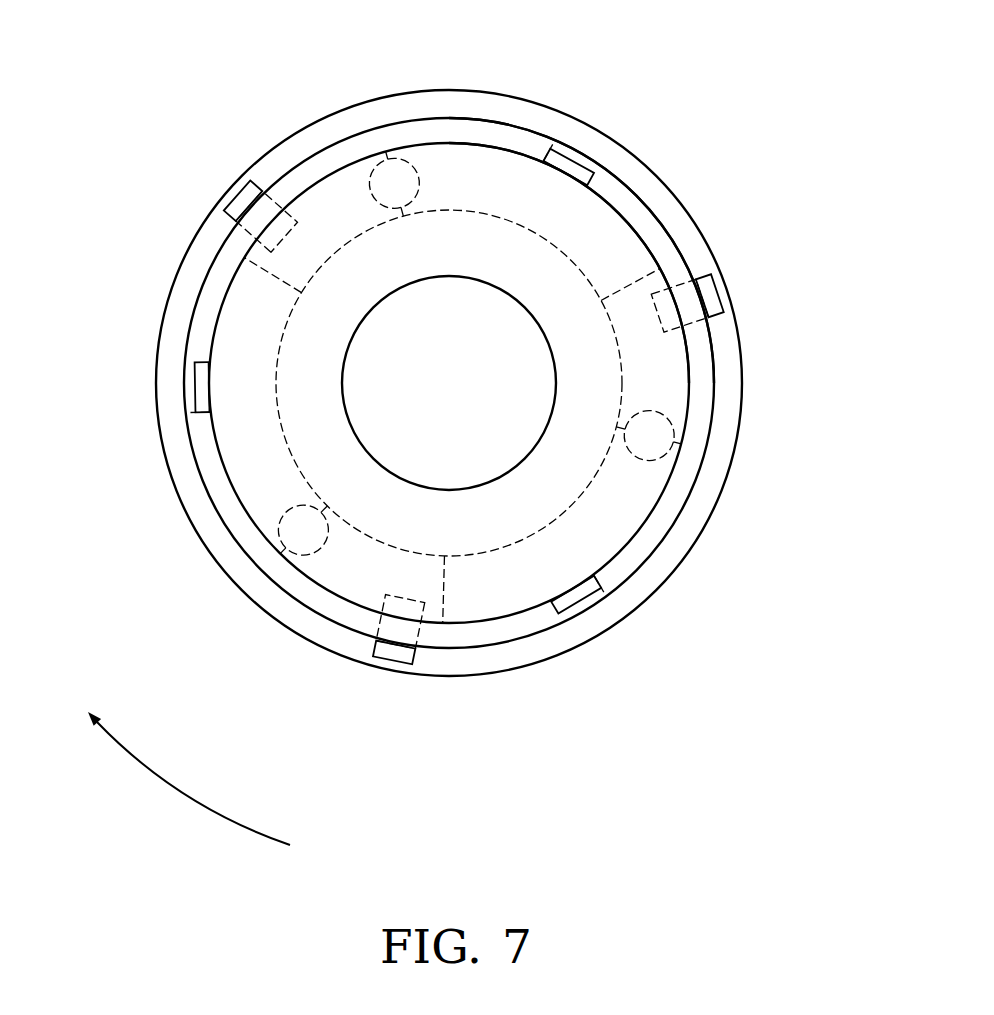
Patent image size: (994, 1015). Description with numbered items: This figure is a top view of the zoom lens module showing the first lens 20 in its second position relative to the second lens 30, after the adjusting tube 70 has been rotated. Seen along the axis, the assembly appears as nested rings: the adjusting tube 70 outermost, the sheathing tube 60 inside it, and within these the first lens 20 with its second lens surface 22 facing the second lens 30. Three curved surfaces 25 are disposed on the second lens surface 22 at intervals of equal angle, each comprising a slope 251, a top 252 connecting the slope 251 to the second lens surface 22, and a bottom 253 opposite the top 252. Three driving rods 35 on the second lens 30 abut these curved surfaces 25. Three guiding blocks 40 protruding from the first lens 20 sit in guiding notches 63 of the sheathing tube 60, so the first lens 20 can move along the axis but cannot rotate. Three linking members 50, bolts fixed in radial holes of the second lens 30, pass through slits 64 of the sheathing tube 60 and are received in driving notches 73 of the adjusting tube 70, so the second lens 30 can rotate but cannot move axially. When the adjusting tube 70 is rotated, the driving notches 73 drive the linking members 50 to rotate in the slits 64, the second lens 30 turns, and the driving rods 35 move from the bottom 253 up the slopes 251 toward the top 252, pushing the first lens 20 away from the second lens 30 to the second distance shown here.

The first lens 20 is at (615, 197).
The second lens 30 is at (458, 334).
The second lens surface 22 is at (637, 507).
The curved surfaces 25 is at (702, 400).
The slope 251 is at (300, 595).
The top 252 is at (672, 440).
The bottom 253 is at (700, 262).
The driving rods 35 is at (653, 452).
The guiding blocks 40 is at (580, 593).
The linking members 50 is at (708, 298).
The sheathing tube 60 is at (667, 213).
The guiding notches 63 is at (575, 663).
The slits 64 is at (667, 247).
The adjusting tube 70 is at (658, 170).
The driving notches 73 is at (520, 465).